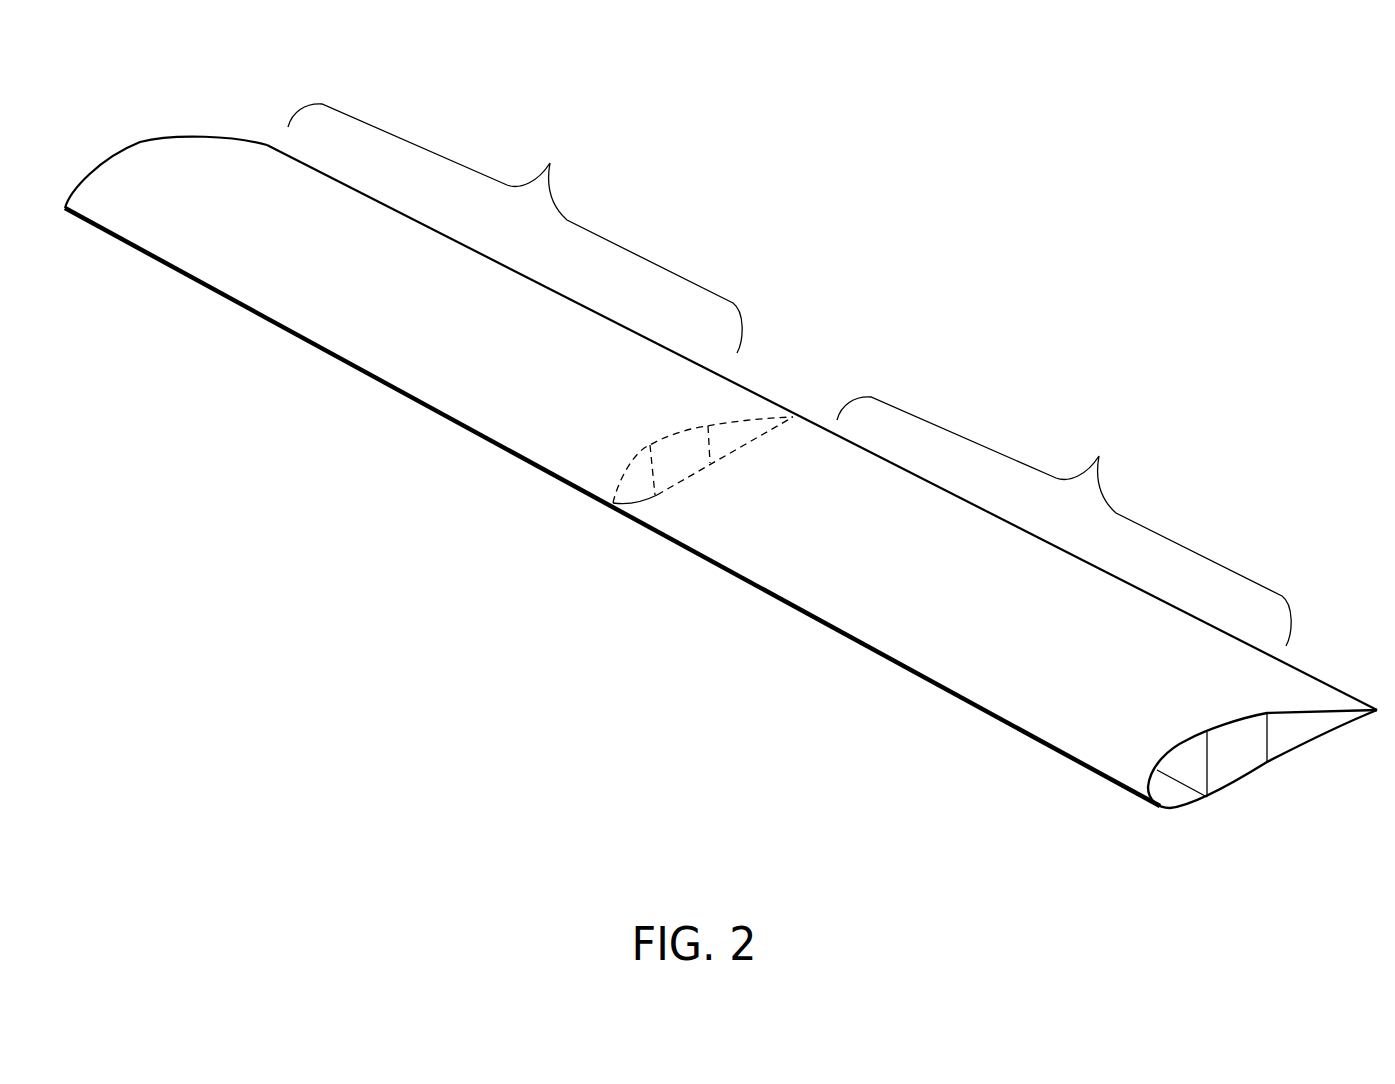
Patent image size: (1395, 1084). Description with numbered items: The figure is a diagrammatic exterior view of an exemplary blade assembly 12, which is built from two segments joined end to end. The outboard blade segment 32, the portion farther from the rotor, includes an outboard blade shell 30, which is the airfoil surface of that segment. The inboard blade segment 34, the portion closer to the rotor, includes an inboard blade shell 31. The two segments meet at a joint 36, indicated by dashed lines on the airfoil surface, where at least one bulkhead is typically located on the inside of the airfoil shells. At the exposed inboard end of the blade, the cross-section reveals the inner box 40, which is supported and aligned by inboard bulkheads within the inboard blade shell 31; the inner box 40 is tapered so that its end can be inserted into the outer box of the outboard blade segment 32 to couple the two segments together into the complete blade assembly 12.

The blade assembly 12 is at (1252, 131).
The outboard blade shell 30 is at (125, 155).
The inboard blade shell 31 is at (878, 630).
The outboard blade segment 32 is at (515, 228).
The inboard blade segment 34 is at (1064, 521).
The joint 36 is at (687, 458).
The inner box 40 is at (1237, 768).